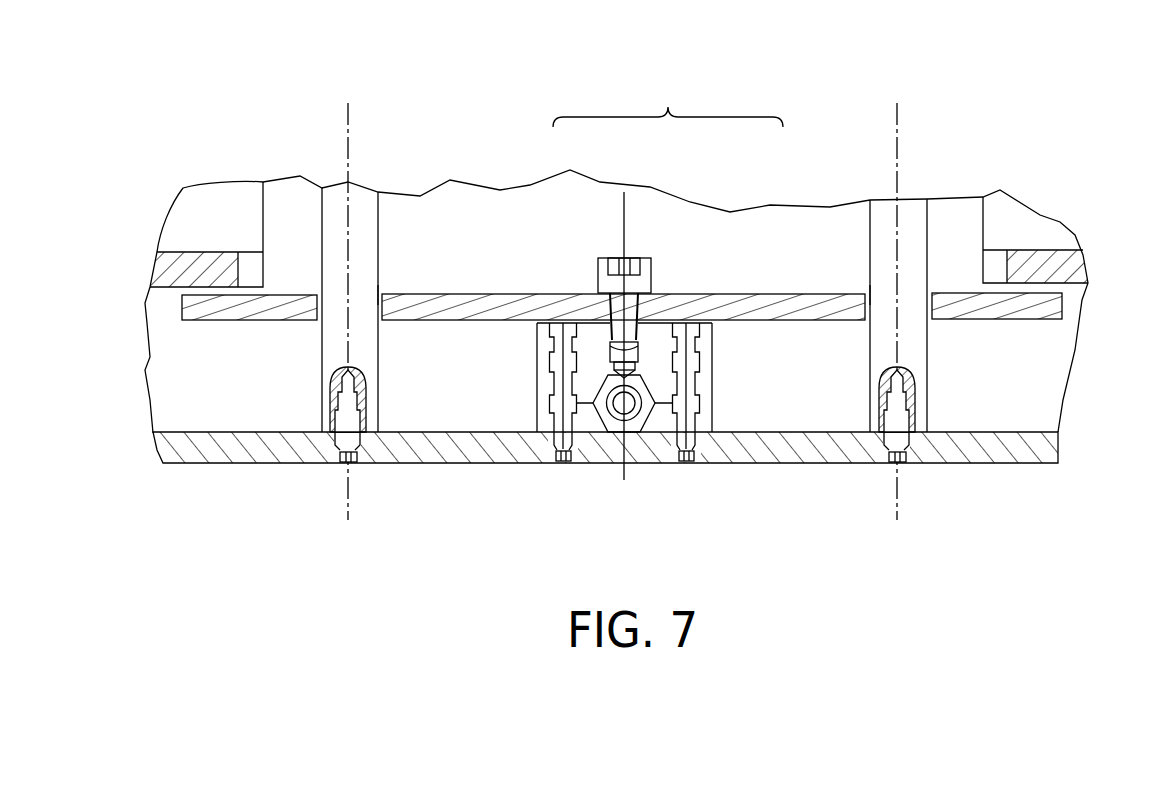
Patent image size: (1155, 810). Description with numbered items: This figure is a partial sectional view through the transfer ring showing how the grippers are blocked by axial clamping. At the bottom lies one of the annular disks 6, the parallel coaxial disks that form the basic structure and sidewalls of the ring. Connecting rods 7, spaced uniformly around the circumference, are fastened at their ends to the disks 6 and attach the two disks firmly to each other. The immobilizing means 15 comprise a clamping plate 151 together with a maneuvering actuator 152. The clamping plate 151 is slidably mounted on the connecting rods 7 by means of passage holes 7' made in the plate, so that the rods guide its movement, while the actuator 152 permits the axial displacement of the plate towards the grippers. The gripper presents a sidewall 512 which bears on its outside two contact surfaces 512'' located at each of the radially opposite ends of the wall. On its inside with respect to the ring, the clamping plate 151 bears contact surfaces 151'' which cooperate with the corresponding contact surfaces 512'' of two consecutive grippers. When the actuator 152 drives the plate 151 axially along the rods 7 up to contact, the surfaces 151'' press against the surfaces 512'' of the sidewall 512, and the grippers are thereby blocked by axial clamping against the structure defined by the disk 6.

The immobilizing means 15 is at (672, 78).
The clamping plate 151 is at (623, 226).
The maneuvering actuator 152 is at (545, 325).
The contact surface 151'' is at (622, 333).
The connecting rod 7 is at (622, 284).
The passage hole 7' is at (623, 269).
The sidewall 512 is at (612, 301).
The contact surface 512'' is at (646, 235).
The annular disk 6 is at (412, 459).